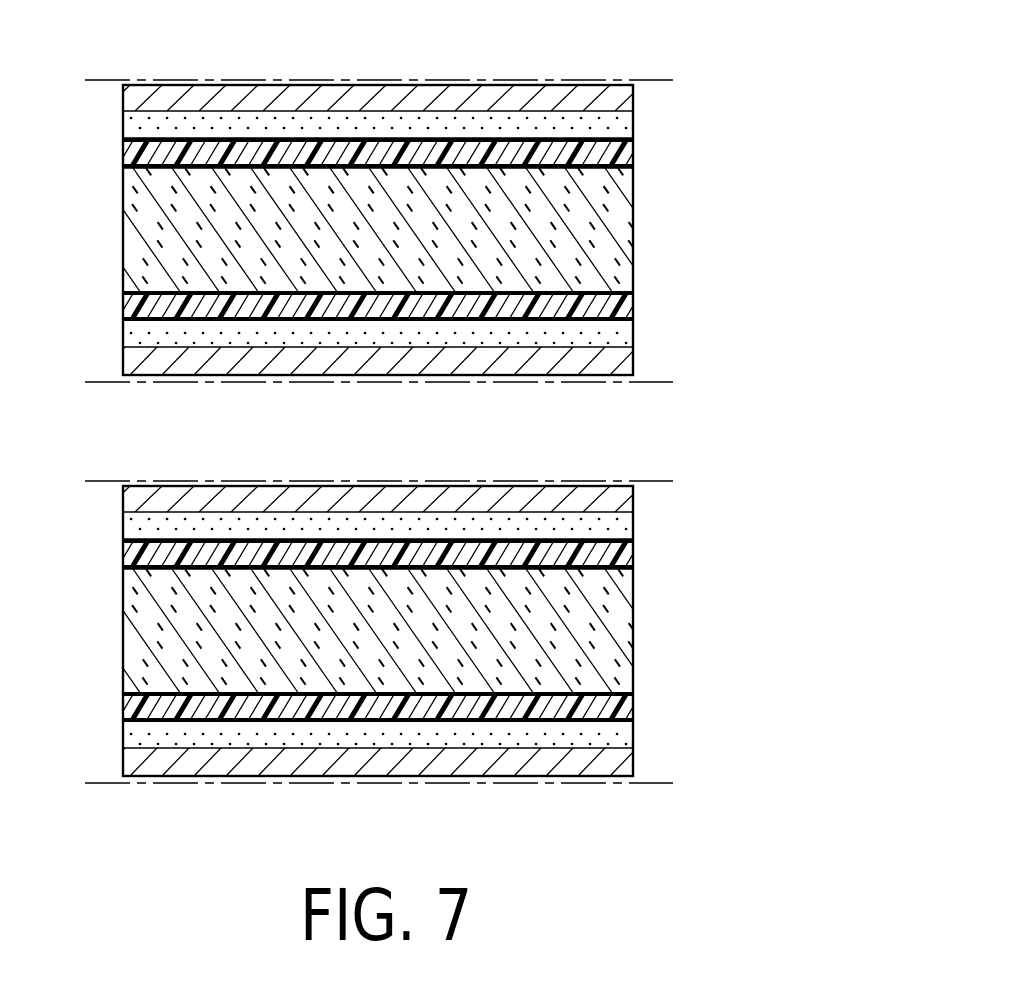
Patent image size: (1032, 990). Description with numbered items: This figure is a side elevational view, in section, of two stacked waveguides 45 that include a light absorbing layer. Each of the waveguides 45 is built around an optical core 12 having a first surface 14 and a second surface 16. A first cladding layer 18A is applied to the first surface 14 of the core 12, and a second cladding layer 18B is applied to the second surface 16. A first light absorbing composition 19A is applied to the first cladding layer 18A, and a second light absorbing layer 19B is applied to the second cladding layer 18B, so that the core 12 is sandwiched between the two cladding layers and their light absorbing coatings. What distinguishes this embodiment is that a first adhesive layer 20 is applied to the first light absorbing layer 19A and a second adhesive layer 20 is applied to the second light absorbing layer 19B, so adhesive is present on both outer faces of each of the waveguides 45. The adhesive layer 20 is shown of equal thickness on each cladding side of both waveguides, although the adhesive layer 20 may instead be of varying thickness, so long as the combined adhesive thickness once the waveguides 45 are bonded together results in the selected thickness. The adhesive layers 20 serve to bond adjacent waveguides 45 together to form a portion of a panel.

The optical core 12 is at (633, 230).
The first surface 14 is at (172, 170).
The second surface 16 is at (170, 291).
The first cladding layer 18A is at (633, 150).
The second cladding layer 18B is at (633, 298).
The first light absorbing composition 19A is at (633, 122).
The second light absorbing layer 19B is at (633, 332).
The adhesive layer 20 is at (118, 99).
The waveguides 45 is at (780, 173).